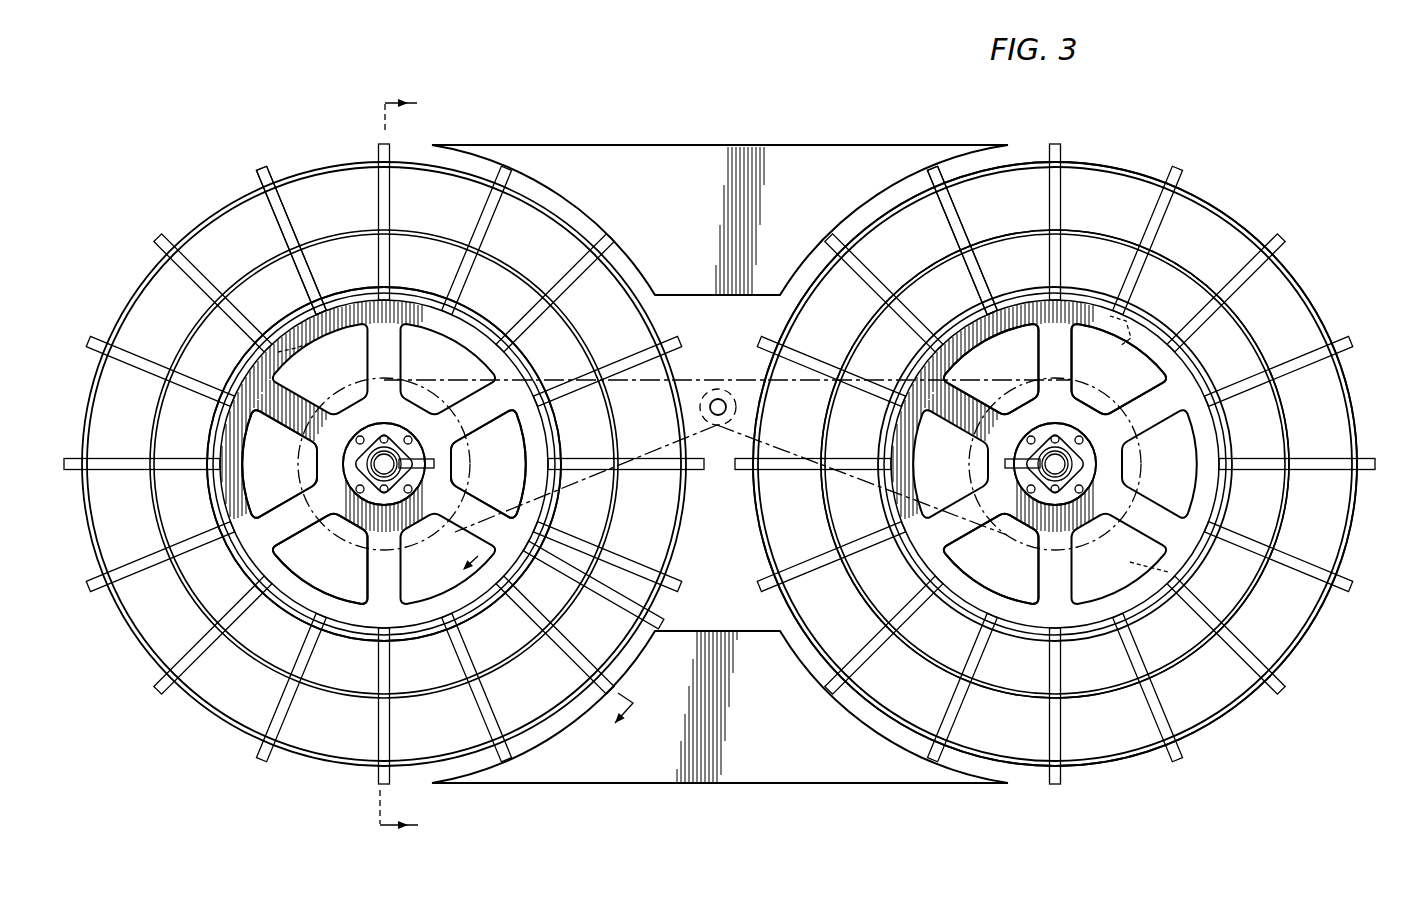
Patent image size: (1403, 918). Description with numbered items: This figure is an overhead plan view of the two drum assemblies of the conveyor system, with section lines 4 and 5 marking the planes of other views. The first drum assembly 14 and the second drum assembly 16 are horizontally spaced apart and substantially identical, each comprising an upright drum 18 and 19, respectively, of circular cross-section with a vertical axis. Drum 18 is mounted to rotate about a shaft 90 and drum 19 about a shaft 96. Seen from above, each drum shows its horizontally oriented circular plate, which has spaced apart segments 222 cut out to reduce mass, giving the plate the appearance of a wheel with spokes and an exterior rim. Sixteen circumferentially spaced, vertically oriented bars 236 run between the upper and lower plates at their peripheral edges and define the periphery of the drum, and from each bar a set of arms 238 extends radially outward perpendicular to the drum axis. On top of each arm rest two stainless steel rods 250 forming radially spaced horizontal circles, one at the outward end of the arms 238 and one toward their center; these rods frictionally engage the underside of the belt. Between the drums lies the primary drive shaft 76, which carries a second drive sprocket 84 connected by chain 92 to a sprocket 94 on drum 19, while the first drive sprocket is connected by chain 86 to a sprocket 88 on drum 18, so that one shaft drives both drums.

The first drum assembly 14 is at (1063, 790).
The second drum assembly 16 is at (273, 782).
The rotatable upright drum 18 is at (905, 570).
The rotatable upright drum 19 is at (347, 638).
The primary drive shaft 76 is at (722, 398).
The second drive sprocket 84 is at (716, 392).
The chain 86 is at (978, 373).
The sprocket 88 is at (1092, 381).
The shaft 90 is at (1075, 452).
The chain 92 is at (648, 450).
The sprocket 94 is at (470, 488).
The shaft 96 is at (392, 442).
The cut-out segments 222 is at (310, 568).
The vertical bars 236 is at (340, 340).
The arms 238 is at (265, 184).
The stainless steel rods 250 is at (912, 278).
The section line 4- 4 is at (399, 470).
The section line 5- 5 is at (536, 644).